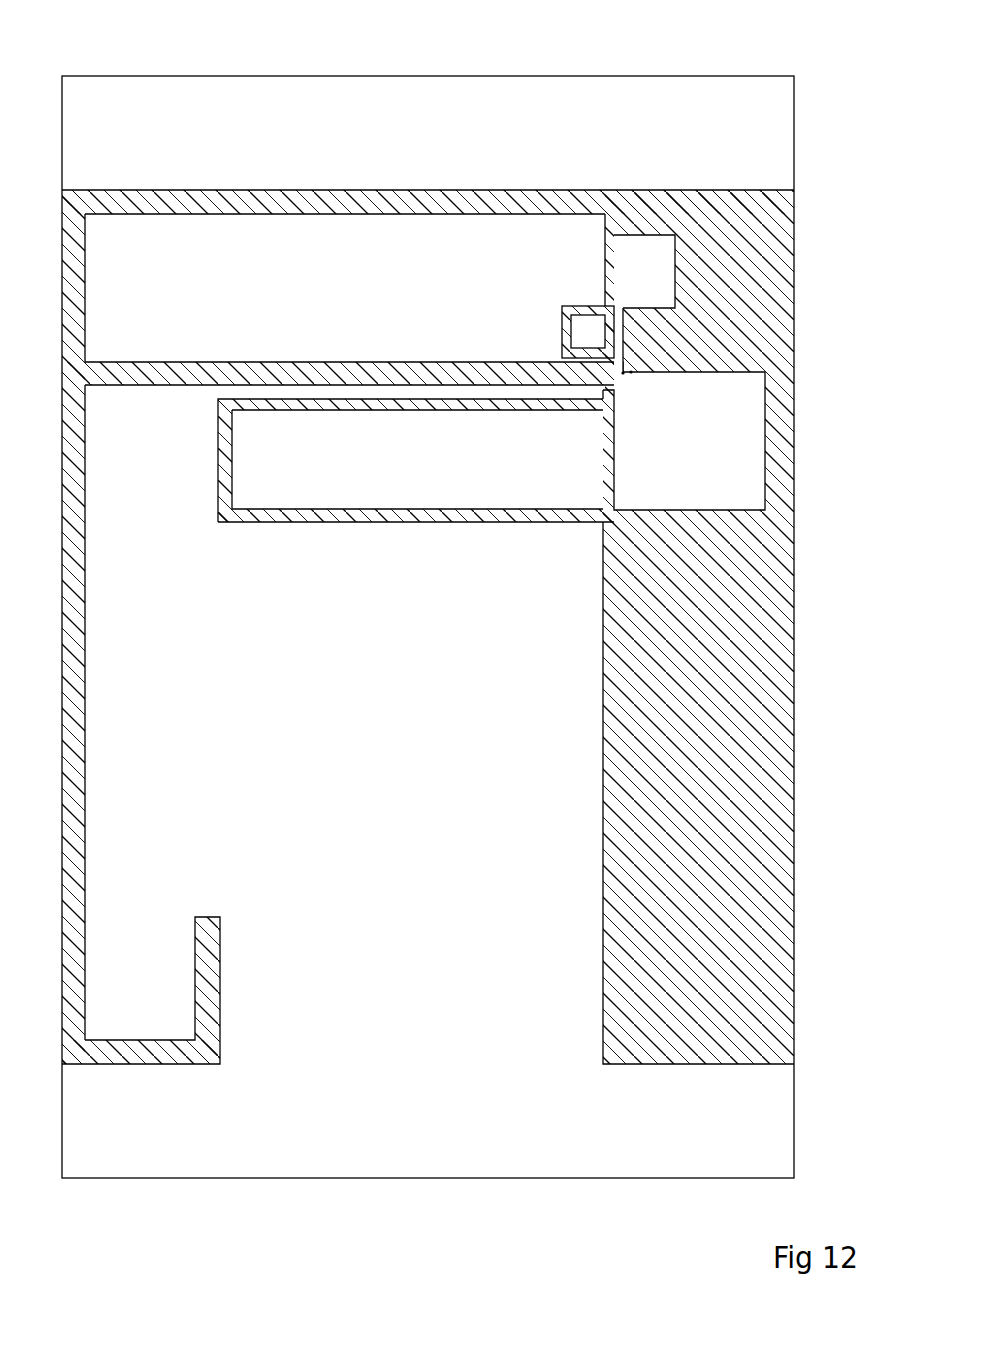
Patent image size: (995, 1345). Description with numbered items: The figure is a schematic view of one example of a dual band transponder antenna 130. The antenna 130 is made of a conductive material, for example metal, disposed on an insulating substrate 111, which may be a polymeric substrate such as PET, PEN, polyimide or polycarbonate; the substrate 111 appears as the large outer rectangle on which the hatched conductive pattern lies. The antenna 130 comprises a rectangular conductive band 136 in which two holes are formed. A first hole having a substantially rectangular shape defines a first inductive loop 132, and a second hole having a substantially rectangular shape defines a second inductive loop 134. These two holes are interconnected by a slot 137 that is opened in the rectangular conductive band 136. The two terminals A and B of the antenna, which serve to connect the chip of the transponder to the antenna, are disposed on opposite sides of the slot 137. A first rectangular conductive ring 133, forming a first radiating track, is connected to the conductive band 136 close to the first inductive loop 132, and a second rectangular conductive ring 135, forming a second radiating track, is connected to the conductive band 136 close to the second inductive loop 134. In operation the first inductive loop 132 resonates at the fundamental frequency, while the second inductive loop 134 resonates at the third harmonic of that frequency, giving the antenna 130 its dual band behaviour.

The dual band transponder antenna 130 is at (462, 590).
The insulating substrate 111 is at (767, 133).
The first inductive loop 132 is at (604, 465).
The first rectangular conductive ring 133 is at (375, 515).
The second inductive loop 134 is at (605, 260).
The second rectangular conductive ring 135 is at (562, 329).
The rectangular conductive band 136 is at (633, 810).
The slot 137 is at (618, 327).
The terminal A is at (624, 375).
The terminal B is at (632, 374).